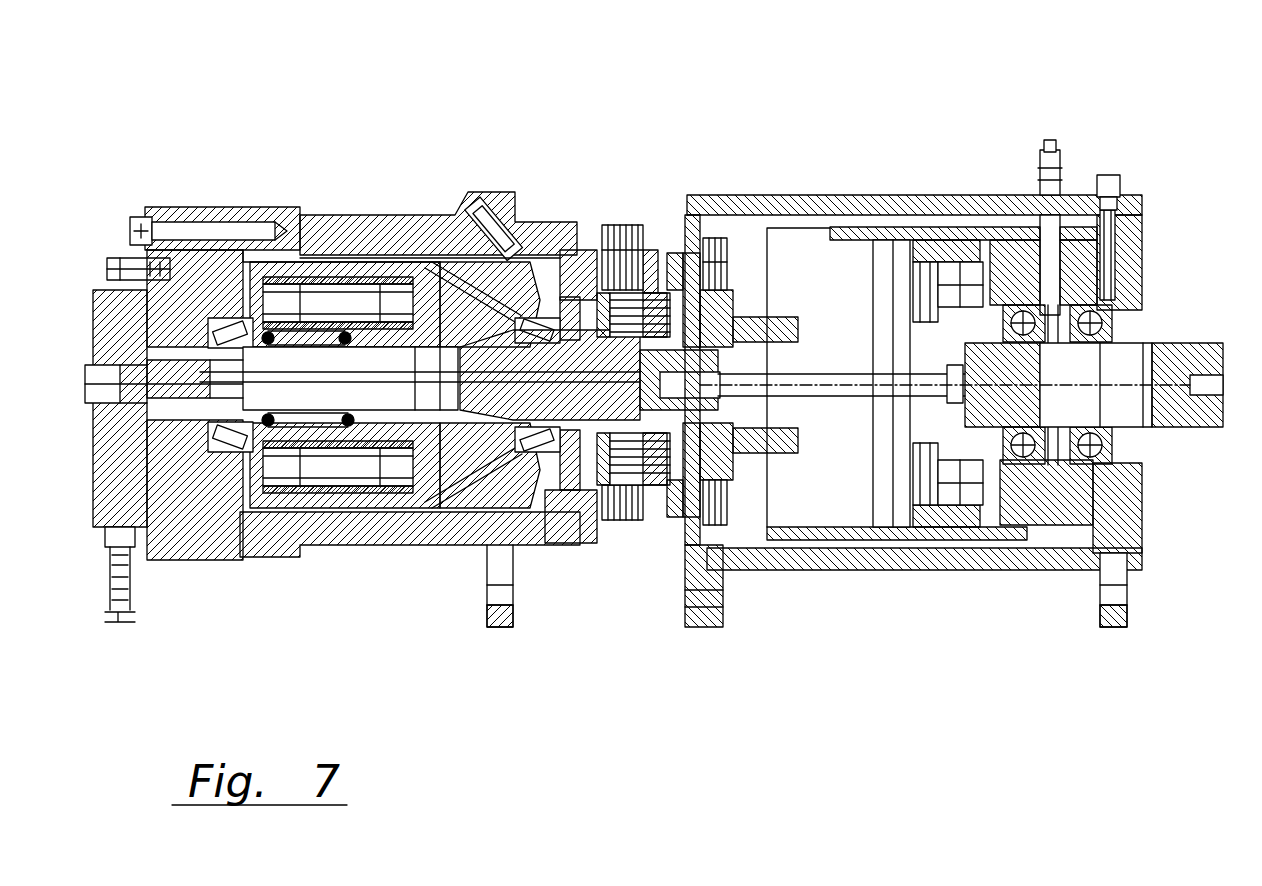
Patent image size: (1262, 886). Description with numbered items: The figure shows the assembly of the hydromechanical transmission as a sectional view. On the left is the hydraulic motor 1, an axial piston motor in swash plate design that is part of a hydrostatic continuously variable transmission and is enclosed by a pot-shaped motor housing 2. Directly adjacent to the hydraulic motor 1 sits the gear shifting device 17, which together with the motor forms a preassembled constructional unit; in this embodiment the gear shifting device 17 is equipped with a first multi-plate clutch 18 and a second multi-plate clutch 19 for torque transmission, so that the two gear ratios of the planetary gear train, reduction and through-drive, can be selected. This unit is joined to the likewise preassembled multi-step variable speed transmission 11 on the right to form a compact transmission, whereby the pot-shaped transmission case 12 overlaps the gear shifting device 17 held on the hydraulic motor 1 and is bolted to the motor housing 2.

The hydraulic motor 1 is at (402, 348).
The motor housing 2 is at (371, 409).
The multi-step variable speed transmission 11 is at (945, 328).
The transmission case 12 is at (893, 205).
The gear shifting device 17 is at (665, 145).
The first multi-plate clutch 18 is at (628, 205).
The second multi-plate clutch 19 is at (721, 212).